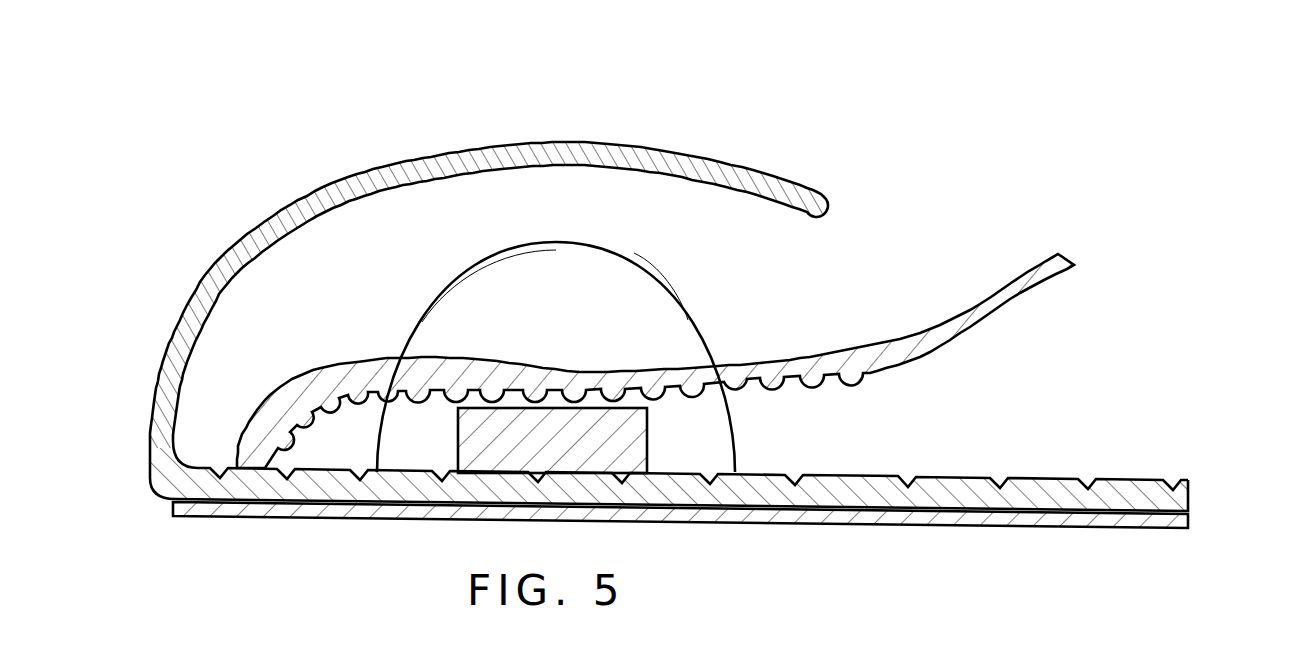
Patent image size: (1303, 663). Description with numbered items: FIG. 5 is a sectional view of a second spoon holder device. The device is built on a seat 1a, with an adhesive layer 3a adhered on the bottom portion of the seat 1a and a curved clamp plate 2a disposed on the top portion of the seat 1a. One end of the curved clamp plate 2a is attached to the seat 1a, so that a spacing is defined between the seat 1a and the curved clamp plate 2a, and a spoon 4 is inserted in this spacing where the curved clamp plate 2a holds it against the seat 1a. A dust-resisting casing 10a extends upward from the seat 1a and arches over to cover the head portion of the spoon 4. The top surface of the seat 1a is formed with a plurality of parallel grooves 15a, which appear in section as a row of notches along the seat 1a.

The dust-resisting casing 10a is at (622, 131).
The curved clamp plate 2a is at (1071, 246).
The spoon 4 is at (492, 276).
The parallel grooves 15a is at (986, 470).
The seat 1a is at (1199, 500).
The adhesive layer 3a is at (1199, 526).